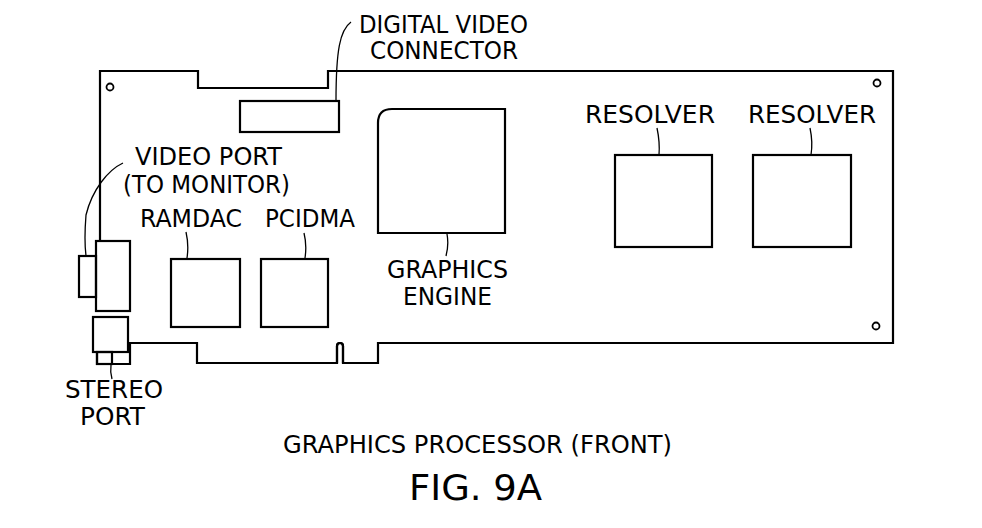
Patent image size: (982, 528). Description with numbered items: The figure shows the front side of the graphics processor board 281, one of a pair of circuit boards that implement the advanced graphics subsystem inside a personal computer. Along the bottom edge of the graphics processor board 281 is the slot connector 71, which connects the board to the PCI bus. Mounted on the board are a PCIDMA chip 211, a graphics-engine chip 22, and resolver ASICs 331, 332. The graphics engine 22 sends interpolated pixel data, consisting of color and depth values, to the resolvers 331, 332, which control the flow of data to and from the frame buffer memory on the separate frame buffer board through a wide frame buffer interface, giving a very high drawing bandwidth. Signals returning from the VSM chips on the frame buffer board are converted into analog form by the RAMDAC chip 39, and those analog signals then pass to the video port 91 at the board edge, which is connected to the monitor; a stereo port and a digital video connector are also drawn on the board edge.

The graphics processor board 281 is at (763, 70).
The graphics engine ASIC 22 is at (455, 183).
The resolver ASIC 331 is at (682, 208).
The resolver ASIC 332 is at (822, 208).
The RAMDAC chip 39 is at (218, 306).
The PCIDMA chip 211 is at (313, 306).
The video port 91 is at (79, 273).
The slot connector 71 is at (362, 365).